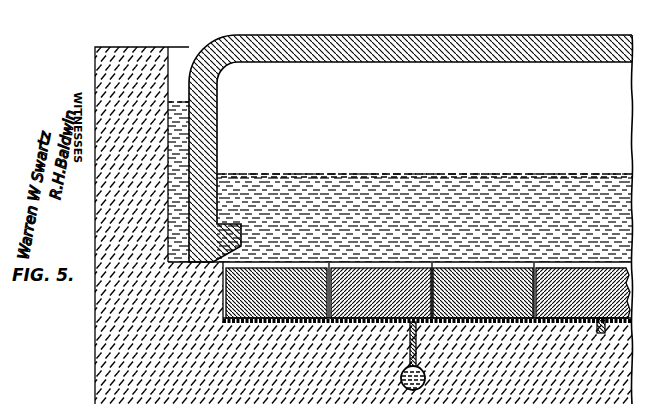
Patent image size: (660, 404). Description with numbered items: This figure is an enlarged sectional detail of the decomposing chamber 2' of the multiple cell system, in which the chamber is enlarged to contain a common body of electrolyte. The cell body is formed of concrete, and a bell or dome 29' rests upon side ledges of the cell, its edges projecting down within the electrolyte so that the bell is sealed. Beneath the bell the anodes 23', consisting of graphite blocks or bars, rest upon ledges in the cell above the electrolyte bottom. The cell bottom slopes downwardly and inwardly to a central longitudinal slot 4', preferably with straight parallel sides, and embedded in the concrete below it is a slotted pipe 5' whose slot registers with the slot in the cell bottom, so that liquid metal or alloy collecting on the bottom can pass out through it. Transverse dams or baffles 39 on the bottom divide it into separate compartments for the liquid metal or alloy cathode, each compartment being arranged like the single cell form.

The decomposing chamber 2' is at (363, 216).
The bell or dome 29' is at (410, 150).
The anodes 23' is at (427, 282).
The central longitudinal slot 4' is at (426, 345).
The slotted pipe 5' is at (427, 378).
The dams or baffles 39 is at (601, 334).